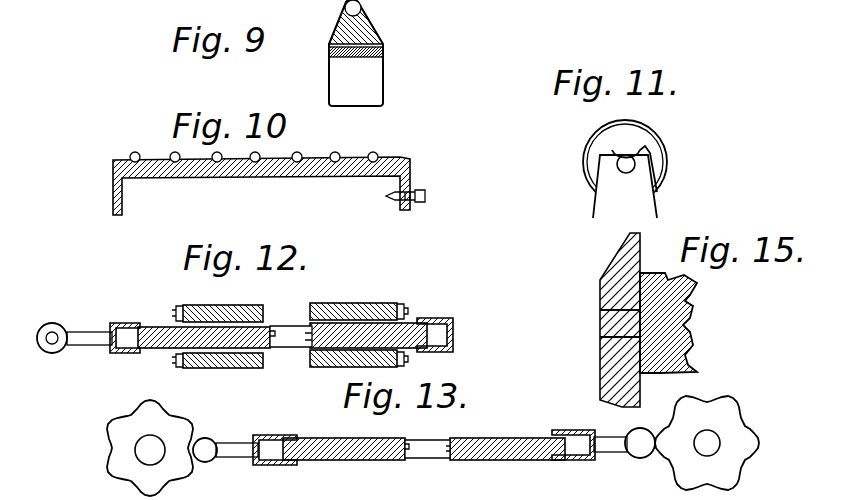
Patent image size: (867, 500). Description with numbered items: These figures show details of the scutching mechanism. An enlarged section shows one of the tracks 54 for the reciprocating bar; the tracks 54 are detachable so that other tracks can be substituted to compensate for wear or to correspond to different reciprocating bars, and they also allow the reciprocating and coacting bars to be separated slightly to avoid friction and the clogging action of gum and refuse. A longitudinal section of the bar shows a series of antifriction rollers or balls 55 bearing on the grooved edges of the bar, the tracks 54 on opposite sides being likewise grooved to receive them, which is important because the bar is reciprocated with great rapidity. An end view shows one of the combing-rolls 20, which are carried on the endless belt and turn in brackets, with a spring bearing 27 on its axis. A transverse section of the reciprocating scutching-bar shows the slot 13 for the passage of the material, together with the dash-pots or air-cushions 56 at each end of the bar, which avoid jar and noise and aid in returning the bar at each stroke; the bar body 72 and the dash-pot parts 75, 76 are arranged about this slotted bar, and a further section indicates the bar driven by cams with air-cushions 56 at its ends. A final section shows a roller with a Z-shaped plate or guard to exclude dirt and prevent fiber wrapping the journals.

In FIG. 9, the tracks 54 is at (374, 53).
In FIG. 10, the tracks 54 is at (269, 186).
In FIG. 12, the tracks 54 is at (243, 367).
In FIG. 10, the antifriction rollers or balls 55 is at (254, 145).
In FIG. 11, the combing-rolls 20 is at (633, 163).
In FIG. 11, the spring clip 27 is at (643, 168).
In FIG. 12, the air-cushions 56 is at (133, 313).
In FIG. 13, the air-cushions 56 is at (264, 465).
In FIG. 12, the threaded rod 72 is at (170, 348).
In FIG. 13, the threaded rod 72 is at (424, 461).
In FIG. 12, the slot 13 is at (293, 348).
In FIG. 13, the slot 13 is at (427, 463).
In FIG. 12, the lower clamp block 75 is at (368, 356).
In FIG. 12, the upper clamp block 76 is at (217, 303).